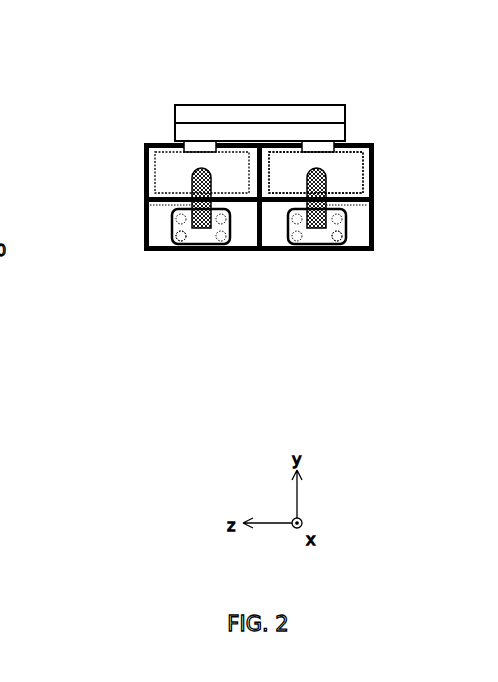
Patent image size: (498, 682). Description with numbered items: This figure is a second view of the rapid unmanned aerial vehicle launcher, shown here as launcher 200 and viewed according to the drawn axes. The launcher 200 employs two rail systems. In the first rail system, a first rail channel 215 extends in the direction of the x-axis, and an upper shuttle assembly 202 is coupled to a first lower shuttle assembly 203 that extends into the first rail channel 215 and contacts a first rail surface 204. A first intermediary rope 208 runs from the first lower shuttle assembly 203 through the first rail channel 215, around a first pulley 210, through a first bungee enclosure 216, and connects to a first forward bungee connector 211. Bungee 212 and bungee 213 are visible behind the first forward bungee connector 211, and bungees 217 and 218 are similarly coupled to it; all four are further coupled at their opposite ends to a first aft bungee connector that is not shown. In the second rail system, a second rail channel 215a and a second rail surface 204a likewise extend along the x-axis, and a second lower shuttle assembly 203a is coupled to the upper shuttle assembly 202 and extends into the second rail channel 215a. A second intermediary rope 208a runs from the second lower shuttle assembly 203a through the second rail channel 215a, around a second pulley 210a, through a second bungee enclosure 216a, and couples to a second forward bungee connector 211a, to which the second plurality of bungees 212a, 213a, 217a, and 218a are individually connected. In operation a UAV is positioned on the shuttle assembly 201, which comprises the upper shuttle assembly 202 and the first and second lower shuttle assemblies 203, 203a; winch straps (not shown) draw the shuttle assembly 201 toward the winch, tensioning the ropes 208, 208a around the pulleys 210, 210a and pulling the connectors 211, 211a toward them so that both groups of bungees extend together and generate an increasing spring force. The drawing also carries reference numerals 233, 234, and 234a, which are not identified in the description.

The launcher 200 is at (165, 52).
The shuttle assembly 201 is at (298, 93).
The upper shuttle assembly 202 is at (174, 130).
The first lower shuttle assembly 203 is at (152, 158).
The second lower shuttle assembly 203a is at (375, 152).
The first rail surface 204 is at (152, 192).
The second rail surface 204a is at (375, 183).
The first intermediary rope 208 is at (190, 212).
The second intermediary rope 208a is at (328, 212).
The first pulley 210 is at (147, 205).
The second pulley 210a is at (375, 207).
The first forward bungee connector 211 is at (172, 224).
The second forward bungee connector 211a is at (346, 225).
The bungee 212 is at (163, 232).
The bungee 212a is at (353, 232).
The bungee 213 is at (184, 242).
The bungee 213a is at (334, 242).
The first rail channel 215 is at (142, 162).
The second rail channel 215a is at (375, 162).
The first bungee enclosure 216 is at (160, 252).
The second bungee enclosure 216a is at (360, 253).
The bungee 217 is at (213, 252).
The bungee 217a is at (307, 252).
The bungee 218 is at (237, 226).
The bungee 218a is at (280, 228).
The upper cavity 233 is at (270, 181).
The side wall 234 is at (141, 172).
The side wall 234a is at (375, 170).